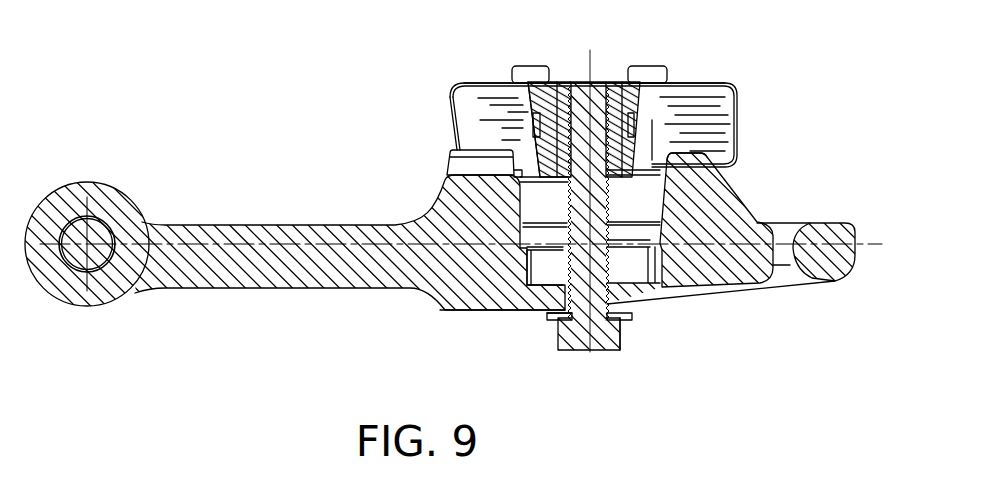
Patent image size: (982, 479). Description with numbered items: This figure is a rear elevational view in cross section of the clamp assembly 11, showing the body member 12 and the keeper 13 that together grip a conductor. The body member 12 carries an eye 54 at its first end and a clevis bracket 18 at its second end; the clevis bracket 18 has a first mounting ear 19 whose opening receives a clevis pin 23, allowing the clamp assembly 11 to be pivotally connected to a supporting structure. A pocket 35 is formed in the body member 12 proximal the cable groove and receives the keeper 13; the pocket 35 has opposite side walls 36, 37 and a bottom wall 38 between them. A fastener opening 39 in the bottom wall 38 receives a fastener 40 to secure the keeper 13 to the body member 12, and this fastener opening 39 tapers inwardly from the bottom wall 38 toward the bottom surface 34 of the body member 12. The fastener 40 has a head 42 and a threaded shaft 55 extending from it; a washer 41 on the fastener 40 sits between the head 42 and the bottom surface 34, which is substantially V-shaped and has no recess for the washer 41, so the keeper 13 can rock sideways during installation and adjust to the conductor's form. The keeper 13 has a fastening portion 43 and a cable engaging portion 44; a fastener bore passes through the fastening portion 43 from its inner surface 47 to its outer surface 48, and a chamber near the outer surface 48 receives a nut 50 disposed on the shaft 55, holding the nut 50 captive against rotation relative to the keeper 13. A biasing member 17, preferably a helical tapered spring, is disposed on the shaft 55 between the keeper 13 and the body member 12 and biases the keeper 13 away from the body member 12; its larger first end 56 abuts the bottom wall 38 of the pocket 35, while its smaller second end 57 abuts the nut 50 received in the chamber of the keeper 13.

The clamp assembly 11 is at (312, 322).
The body member 12 is at (190, 222).
The keeper 13 is at (490, 80).
The biasing member 17 is at (563, 218).
The clevis bracket 18 is at (105, 310).
The first mounting ear 19 is at (60, 185).
The clevis pin 23 is at (98, 215).
The bottom surface 34 is at (648, 308).
The pocket 35 is at (652, 155).
The side wall 36 is at (523, 190).
The side wall 37 is at (690, 250).
The bottom wall 38 is at (660, 258).
The fastener opening 39 is at (545, 322).
The fastener 40 is at (621, 340).
The washer 41 is at (557, 322).
The head 42 is at (612, 352).
The fastening portion 43 is at (540, 163).
The cable engaging portion 44 is at (738, 140).
The inner surface 47 is at (620, 178).
The outer surface 48 is at (560, 80).
The nut 50 is at (616, 82).
The eye 54 is at (785, 265).
The threaded shaft 55 is at (562, 203).
The first end 56 is at (560, 272).
The second end 57 is at (667, 82).